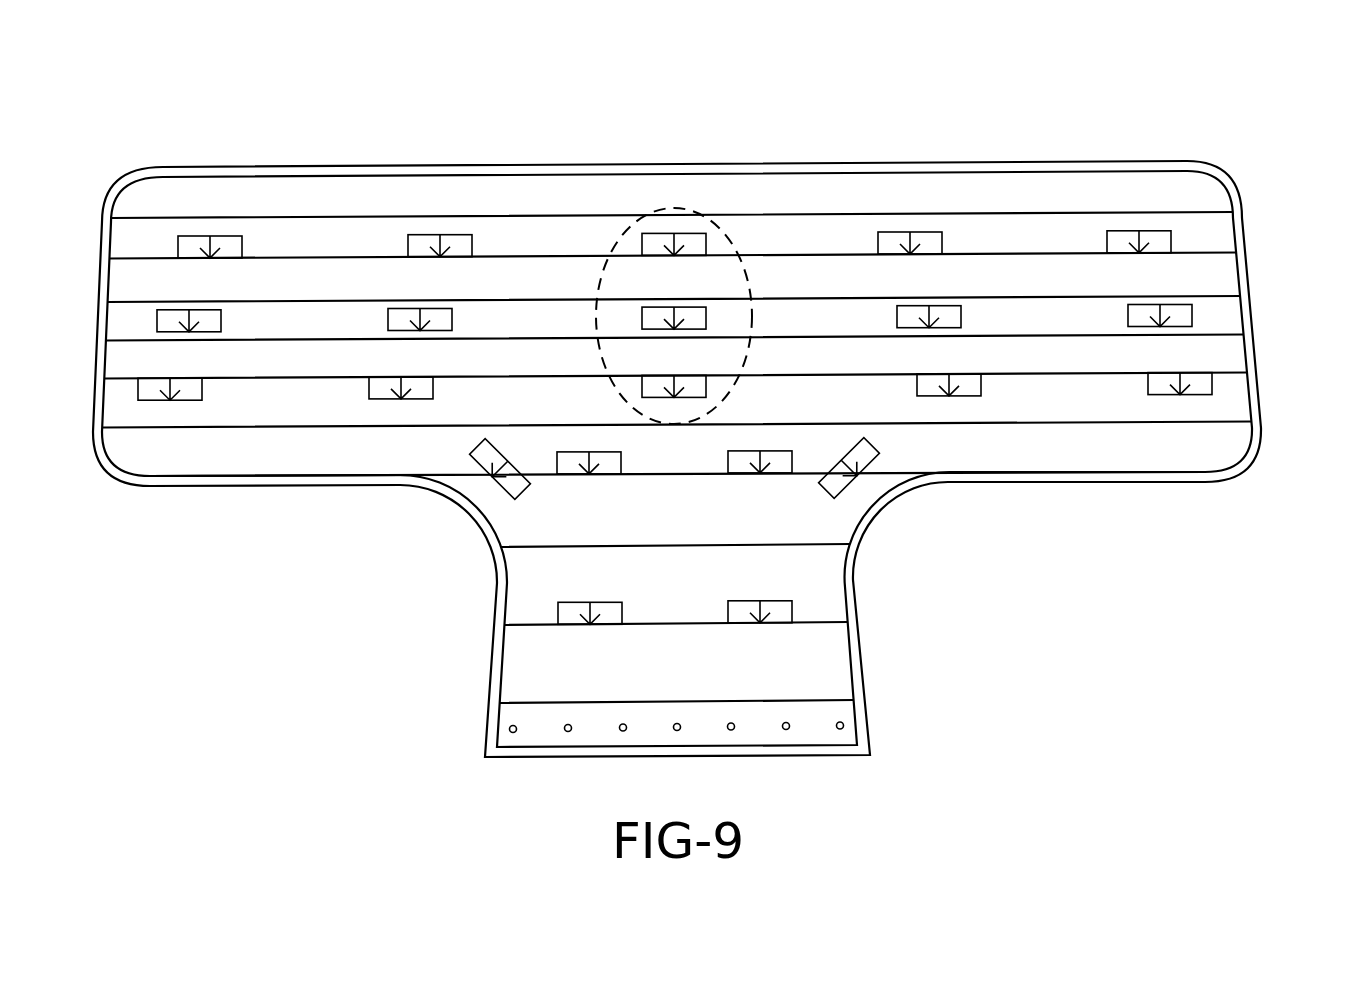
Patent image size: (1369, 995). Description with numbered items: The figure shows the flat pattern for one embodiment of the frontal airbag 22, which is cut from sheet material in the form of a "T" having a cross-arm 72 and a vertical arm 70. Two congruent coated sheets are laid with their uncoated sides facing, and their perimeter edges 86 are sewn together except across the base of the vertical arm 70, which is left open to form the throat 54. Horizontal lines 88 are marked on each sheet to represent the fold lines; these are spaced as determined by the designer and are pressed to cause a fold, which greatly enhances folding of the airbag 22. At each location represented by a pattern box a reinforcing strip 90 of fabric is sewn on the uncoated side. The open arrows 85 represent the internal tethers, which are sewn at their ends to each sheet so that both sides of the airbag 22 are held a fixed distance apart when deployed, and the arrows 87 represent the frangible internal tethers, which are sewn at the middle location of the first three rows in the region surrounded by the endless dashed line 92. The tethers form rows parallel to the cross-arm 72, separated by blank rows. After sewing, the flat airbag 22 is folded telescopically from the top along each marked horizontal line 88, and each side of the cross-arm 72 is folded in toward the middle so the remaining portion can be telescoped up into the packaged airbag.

The frontal airbag 22 is at (1027, 158).
The throat 54 is at (553, 740).
The vertical arm 70 is at (943, 537).
The cross-arm 72 is at (1282, 183).
The open arrows 85 is at (398, 385).
The perimeter edges 86 is at (193, 177).
The arrows 87 is at (673, 250).
The horizontal lines 88 is at (840, 257).
The reinforcing strip 90 is at (460, 237).
The dashed line 92 is at (623, 232).